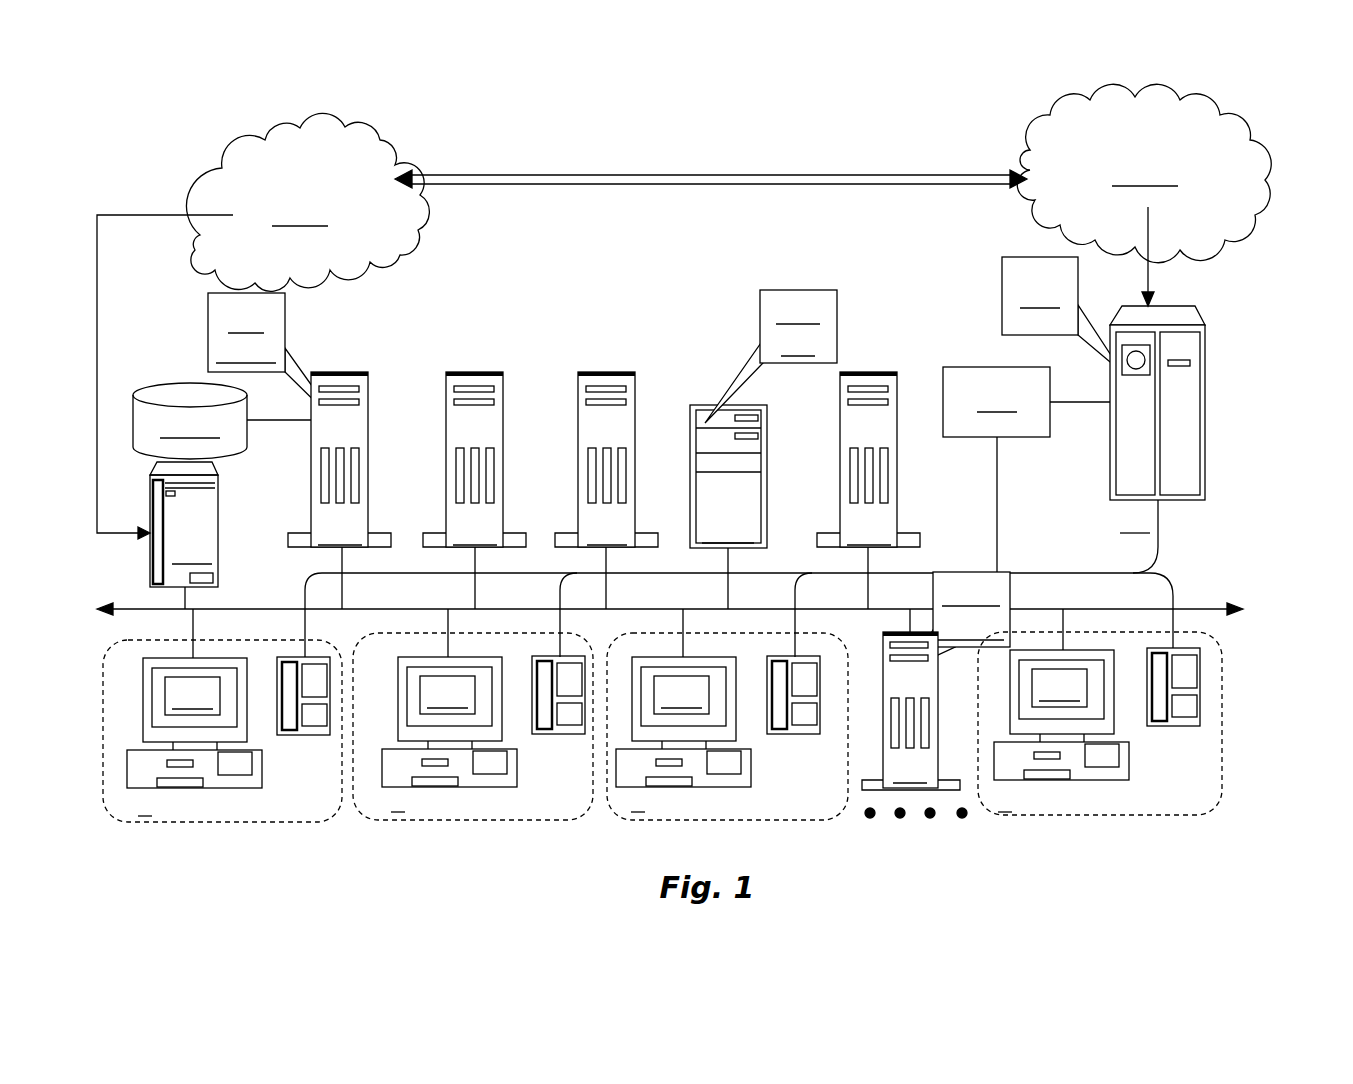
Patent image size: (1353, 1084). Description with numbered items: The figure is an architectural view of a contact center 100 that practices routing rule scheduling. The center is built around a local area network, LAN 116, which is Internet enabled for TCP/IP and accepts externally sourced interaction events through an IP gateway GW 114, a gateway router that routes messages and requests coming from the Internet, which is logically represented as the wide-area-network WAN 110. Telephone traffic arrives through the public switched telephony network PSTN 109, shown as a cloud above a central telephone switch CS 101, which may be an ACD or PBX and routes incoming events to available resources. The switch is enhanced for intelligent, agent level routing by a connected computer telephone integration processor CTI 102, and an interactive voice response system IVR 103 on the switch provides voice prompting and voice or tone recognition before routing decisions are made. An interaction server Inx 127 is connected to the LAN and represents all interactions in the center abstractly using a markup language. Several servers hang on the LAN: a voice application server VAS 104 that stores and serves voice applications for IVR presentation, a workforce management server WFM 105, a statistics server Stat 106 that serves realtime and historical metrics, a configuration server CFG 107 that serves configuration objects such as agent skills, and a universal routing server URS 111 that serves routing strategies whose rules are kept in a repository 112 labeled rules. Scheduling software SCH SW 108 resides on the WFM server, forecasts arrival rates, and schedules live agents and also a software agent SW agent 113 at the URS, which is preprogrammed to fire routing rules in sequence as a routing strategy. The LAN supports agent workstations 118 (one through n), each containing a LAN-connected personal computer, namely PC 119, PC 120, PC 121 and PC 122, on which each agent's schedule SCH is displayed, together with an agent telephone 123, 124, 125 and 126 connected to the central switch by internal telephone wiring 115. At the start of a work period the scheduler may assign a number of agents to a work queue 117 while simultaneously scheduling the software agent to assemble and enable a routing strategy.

The contact center 100 is at (670, 302).
The central telephone switch 101 is at (1108, 436).
The computer telephone integration processor/server 102 is at (995, 367).
The interactive voice response system 103 is at (1040, 257).
The voice application server 104 is at (900, 462).
The workforce management server 105 is at (765, 452).
The statistics server 106 is at (635, 410).
The configuration server 107 is at (503, 410).
The scheduling software application 108 is at (803, 290).
The public switched telephony network 109 is at (1028, 155).
The wide-area-network 110 is at (370, 160).
The universal routing server 111 is at (368, 402).
The rules repository 112 is at (190, 378).
The software agent 113 is at (207, 323).
The IP gateway 114 is at (218, 530).
The internal telephone wiring 115 is at (1093, 572).
The local area network 116 is at (142, 607).
The work queue 117 is at (933, 597).
The agent workstations 118 is at (1245, 711).
The personal computer 119 is at (262, 755).
The personal computer 120 is at (515, 752).
The personal computer 121 is at (750, 752).
The personal computer 122 is at (1130, 755).
The agent telephone 123 is at (293, 657).
The agent telephone 124 is at (548, 656).
The agent telephone 125 is at (783, 656).
The agent telephone 126 is at (1160, 648).
The interaction server 127 is at (883, 667).